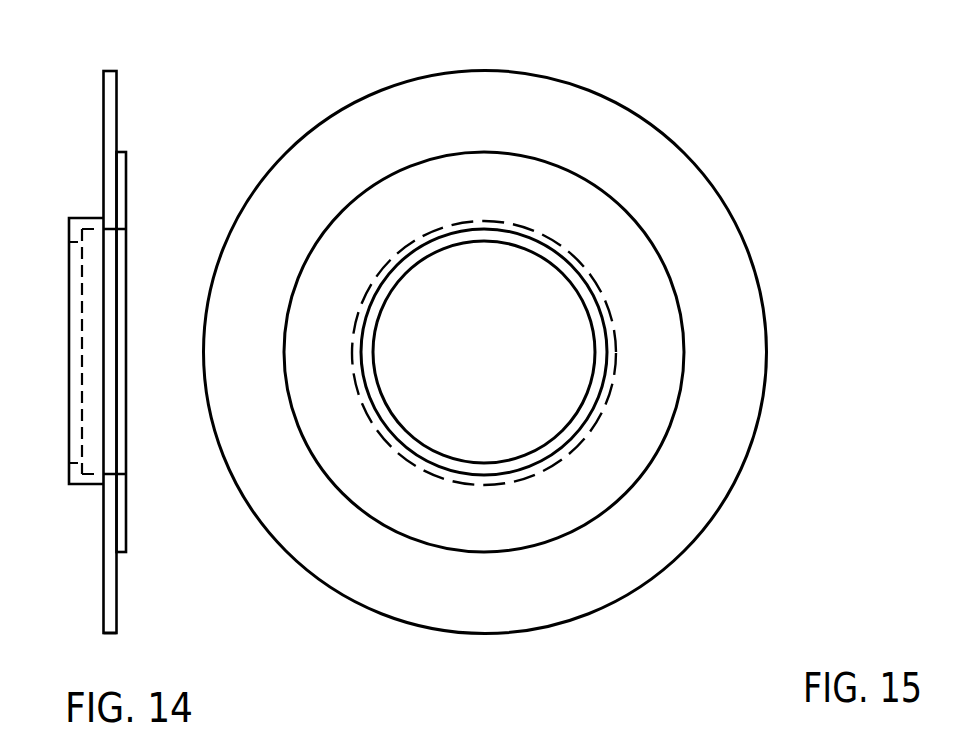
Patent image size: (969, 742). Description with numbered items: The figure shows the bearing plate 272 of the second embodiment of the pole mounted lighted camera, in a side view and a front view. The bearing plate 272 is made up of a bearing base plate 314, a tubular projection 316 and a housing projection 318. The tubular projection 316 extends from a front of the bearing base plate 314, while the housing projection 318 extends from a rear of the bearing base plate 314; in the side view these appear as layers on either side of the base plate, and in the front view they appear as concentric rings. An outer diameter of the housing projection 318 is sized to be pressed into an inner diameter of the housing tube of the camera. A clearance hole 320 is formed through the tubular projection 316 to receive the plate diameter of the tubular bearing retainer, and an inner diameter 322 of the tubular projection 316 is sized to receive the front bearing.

In FIG. 14, the bearing plate 272 is at (125, 55).
In FIG. 15, the bearing plate 272 is at (743, 207).
In FIG. 14, the bearing base plate 314 is at (120, 588).
In FIG. 14, the tubular projection 316 is at (69, 486).
In FIG. 14, the housing projection 318 is at (125, 152).
In FIG. 15, the housing projection 318 is at (687, 353).
In FIG. 15, the clearance hole 320 is at (533, 251).
In FIG. 15, the inner diameter 322 is at (473, 225).